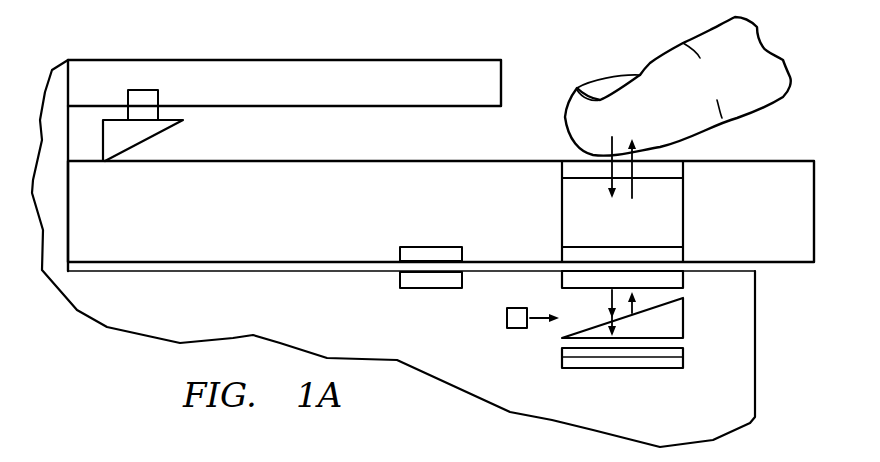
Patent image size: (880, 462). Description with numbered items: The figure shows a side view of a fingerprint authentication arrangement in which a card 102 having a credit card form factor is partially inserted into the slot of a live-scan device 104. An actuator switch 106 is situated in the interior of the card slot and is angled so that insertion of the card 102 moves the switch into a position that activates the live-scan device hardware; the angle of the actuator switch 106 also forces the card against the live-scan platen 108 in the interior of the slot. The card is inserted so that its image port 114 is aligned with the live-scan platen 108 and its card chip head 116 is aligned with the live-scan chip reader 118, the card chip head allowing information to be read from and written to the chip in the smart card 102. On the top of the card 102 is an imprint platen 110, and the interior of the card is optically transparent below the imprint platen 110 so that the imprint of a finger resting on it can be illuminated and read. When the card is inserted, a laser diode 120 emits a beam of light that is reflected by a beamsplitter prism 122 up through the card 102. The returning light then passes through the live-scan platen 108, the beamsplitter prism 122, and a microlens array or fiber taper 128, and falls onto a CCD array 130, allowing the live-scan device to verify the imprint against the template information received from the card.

The card 102 is at (784, 156).
The live-scan device 104 is at (300, 60).
The actuator switch 106 is at (131, 100).
The live-scan platen 108 is at (684, 280).
The imprint platen 110 is at (677, 170).
The image port 114 is at (684, 250).
The card chip head 116 is at (399, 252).
The live-scan chip reader 118 is at (399, 280).
The laser diode 120 is at (505, 315).
The beamsplitter prism 122 is at (684, 318).
The microlens array or fiber taper 128 is at (684, 352).
The CCD array 130 is at (620, 364).